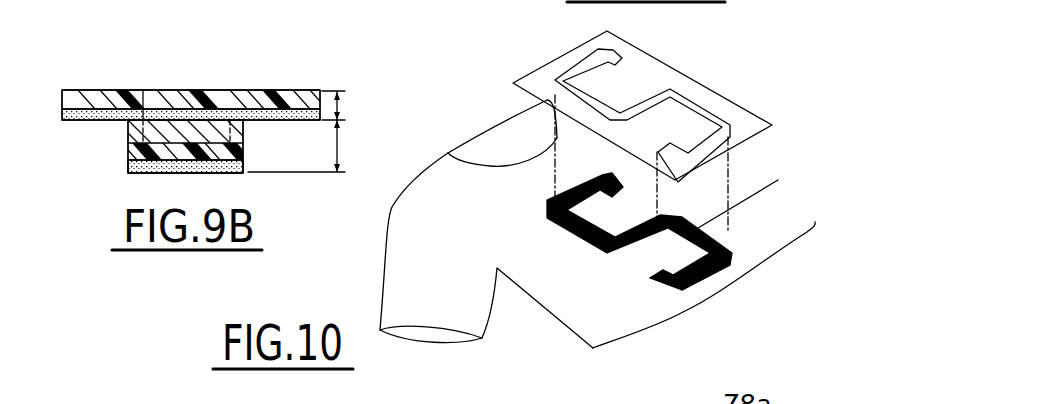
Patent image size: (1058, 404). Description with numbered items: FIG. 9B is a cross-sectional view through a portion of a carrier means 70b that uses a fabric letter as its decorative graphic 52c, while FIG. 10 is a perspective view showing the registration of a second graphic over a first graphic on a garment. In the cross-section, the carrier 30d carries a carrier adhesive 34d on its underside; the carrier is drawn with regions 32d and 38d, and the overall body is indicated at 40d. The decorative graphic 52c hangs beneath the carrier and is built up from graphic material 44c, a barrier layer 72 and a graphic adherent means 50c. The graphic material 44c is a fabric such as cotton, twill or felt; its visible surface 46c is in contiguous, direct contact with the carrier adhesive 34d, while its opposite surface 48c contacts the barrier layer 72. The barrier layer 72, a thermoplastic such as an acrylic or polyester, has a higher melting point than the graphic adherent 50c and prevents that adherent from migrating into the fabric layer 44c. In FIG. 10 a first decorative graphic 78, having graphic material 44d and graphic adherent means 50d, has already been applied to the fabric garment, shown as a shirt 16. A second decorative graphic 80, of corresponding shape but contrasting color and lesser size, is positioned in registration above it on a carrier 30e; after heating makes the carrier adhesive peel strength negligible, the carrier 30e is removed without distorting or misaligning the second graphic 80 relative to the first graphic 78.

In FIG. 9B, the carrier means 70b is at (296, 68).
In FIG. 9B, the carrier 30d is at (341, 104).
In FIG. 9B, the first portion of base layer 32d is at (62, 90).
In FIG. 9B, the second portion of base layer 38d is at (150, 90).
In FIG. 9B, the visible surface 46c is at (143, 90).
In FIG. 9B, the carrier adhesive 34d is at (63, 113).
In FIG. 9B, the decorative graphic 52c is at (340, 152).
In FIG. 9B, the applique body 40d is at (322, 122).
In FIG. 9B, the graphic material 44c is at (243, 135).
In FIG. 9B, the opposite surface 48c is at (140, 137).
In FIG. 9B, the barrier layer 72 is at (243, 156).
In FIG. 9B, the graphic adherent means 50c is at (128, 173).
In FIG. 10, the carrier 30e is at (738, 115).
In FIG. 10, the second decorative graphic 80 is at (664, 90).
In FIG. 10, the graphic material 44d is at (815, 222).
In FIG. 10, the first decorative graphic 78 is at (723, 268).
In FIG. 10, the graphic adherent means 50d is at (656, 285).
In FIG. 10, the garment 16 is at (472, 307).